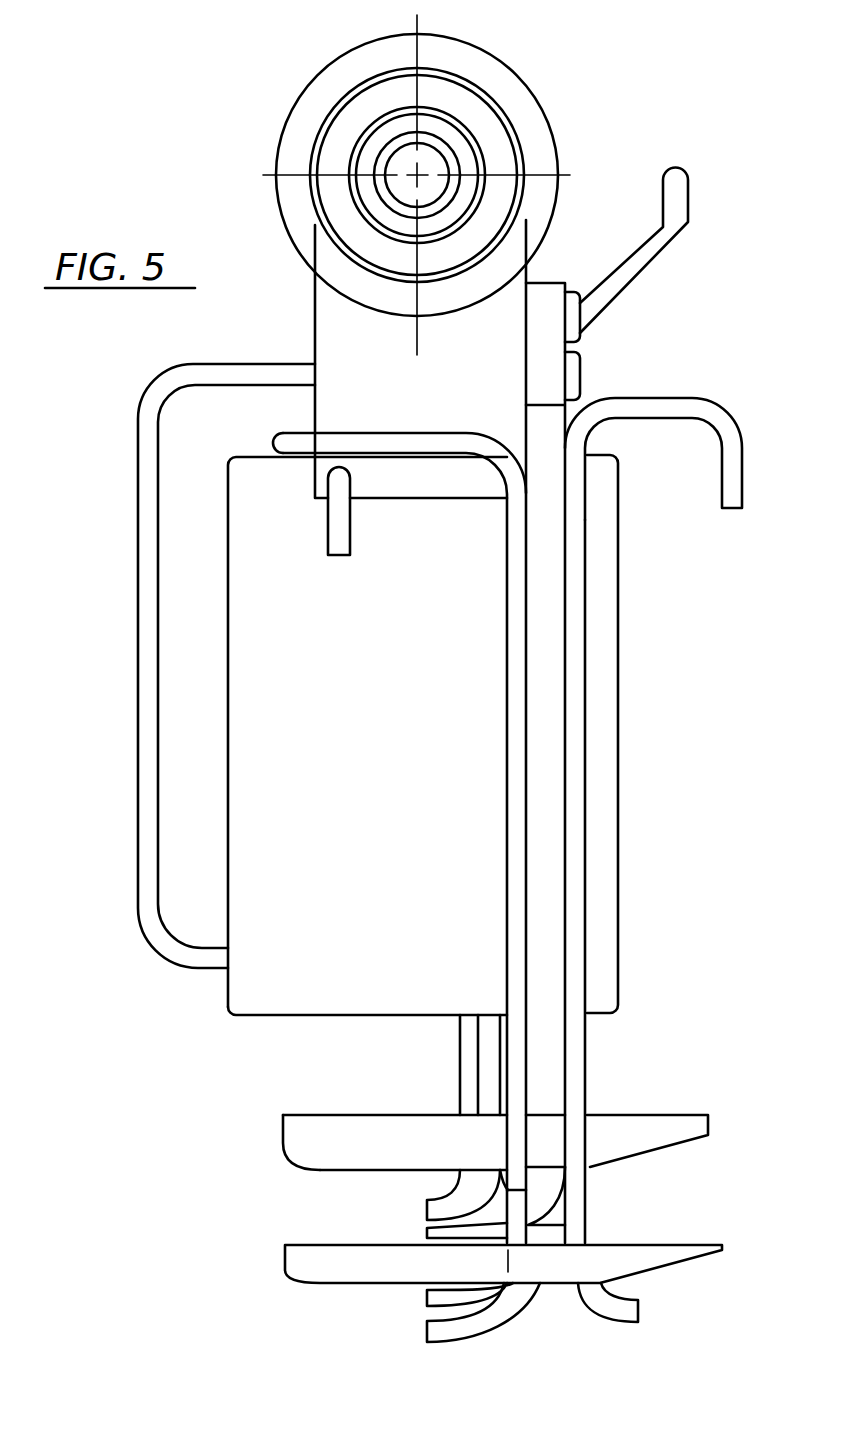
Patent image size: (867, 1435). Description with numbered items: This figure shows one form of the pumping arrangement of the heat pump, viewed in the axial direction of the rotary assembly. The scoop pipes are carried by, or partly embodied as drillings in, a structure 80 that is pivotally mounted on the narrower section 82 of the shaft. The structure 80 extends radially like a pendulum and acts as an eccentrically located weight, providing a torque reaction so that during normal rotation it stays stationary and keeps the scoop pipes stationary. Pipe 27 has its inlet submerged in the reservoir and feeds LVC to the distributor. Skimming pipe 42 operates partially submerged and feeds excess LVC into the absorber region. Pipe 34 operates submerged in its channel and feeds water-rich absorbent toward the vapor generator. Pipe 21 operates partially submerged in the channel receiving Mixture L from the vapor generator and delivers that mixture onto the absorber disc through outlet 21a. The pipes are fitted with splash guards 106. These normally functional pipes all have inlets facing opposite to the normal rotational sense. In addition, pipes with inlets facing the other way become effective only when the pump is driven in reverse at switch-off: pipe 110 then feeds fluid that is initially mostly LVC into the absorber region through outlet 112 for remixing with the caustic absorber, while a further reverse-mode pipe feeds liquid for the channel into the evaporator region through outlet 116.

The narrower section of the shaft 82 is at (402, 163).
The outlet 21a is at (690, 202).
The outlet 112 is at (742, 492).
The pipe 110 is at (588, 725).
The pipe 34 is at (140, 768).
The structure 80 is at (213, 650).
The skimming pipe 42 is at (508, 690).
The outlet 116 is at (328, 541).
The splash guards 106 is at (650, 1114).
The pipe 21 is at (440, 1228).
The pipe 27 is at (506, 1320).